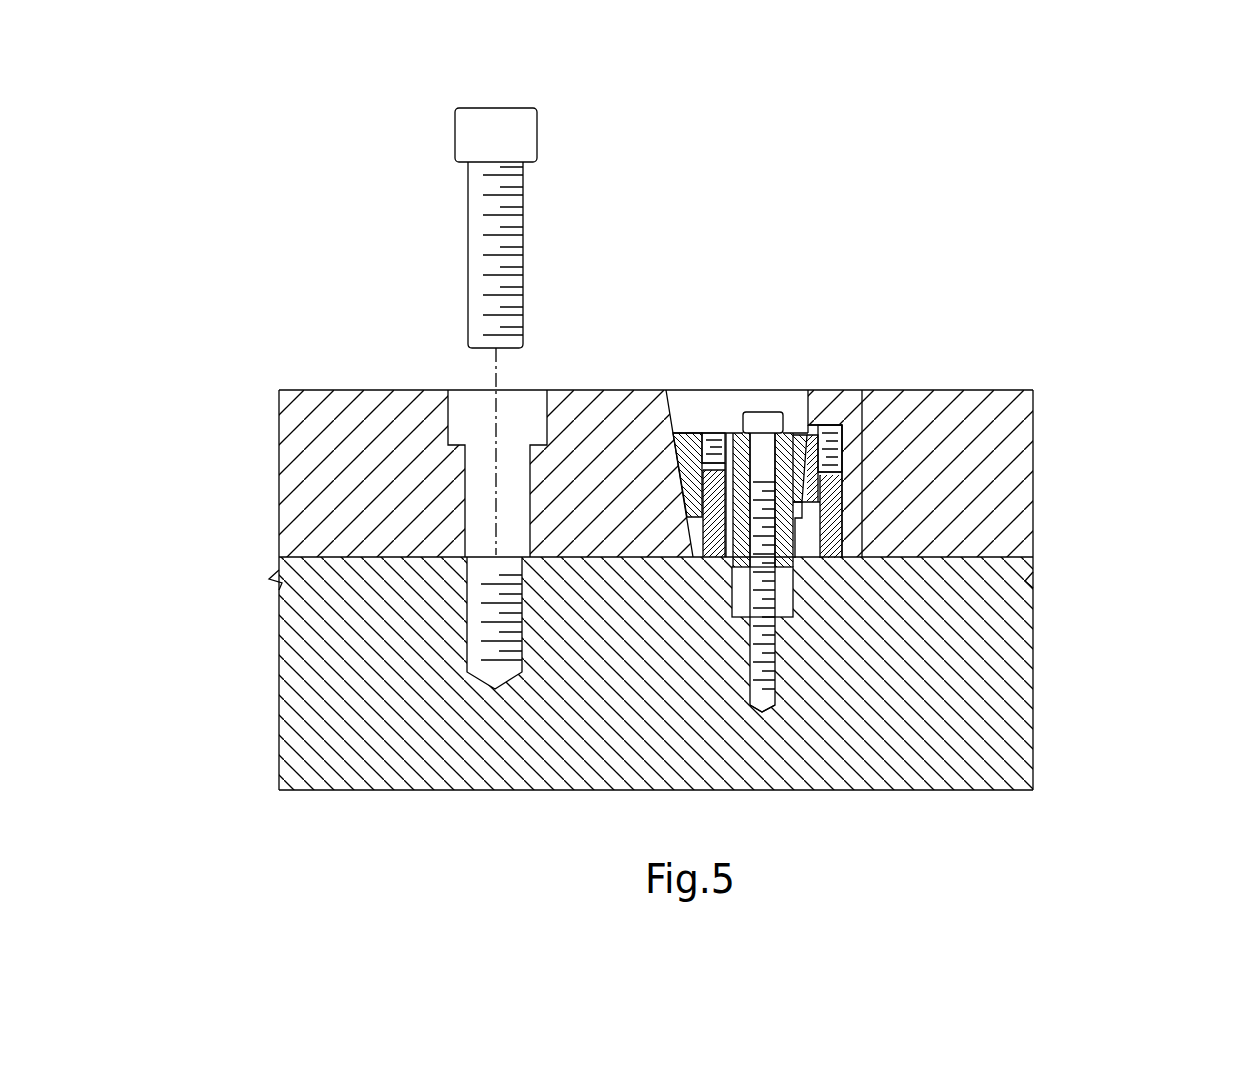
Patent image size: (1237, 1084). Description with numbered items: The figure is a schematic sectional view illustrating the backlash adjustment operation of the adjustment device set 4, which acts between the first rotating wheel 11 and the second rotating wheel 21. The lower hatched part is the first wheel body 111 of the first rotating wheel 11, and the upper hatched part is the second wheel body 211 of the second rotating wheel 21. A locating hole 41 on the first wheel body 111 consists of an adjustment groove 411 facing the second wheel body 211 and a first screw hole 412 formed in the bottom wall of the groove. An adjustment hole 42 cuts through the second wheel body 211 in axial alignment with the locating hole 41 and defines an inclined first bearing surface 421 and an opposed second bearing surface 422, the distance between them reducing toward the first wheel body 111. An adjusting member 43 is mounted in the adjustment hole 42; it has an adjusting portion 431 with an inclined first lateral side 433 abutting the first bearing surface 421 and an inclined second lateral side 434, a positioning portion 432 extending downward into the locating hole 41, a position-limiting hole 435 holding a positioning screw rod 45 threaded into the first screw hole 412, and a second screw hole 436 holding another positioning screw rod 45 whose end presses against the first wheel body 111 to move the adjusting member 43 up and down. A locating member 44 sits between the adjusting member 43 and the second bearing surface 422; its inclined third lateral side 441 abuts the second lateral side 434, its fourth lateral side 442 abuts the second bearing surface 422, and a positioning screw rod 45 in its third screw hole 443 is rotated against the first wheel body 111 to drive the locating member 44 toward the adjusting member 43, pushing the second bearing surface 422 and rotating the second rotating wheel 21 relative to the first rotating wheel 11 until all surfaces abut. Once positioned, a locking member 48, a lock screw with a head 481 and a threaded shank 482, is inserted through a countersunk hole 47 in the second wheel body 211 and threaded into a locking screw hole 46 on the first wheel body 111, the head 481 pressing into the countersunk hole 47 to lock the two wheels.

The adjustment device set 4 is at (760, 563).
The first rotating wheel 11 is at (1045, 660).
The first wheel body 111 is at (877, 790).
The second rotating wheel 21 is at (268, 426).
The second wheel body 211 is at (340, 389).
The locating hole 41 is at (925, 627).
The adjustment groove 411 is at (777, 682).
The first screw hole 412 is at (768, 708).
The adjustment hole 42 is at (677, 581).
The first bearing surface 421 is at (703, 472).
The second bearing surface 422 is at (1060, 522).
The adjusting member 43 is at (754, 554).
The adjusting portion 431 is at (738, 450).
The positioning portion 432 is at (795, 606).
The first lateral side 433 is at (703, 472).
The second lateral side 434 is at (840, 512).
The position-limiting hole 435 is at (800, 435).
The second screw hole 436 is at (712, 455).
The locating member 44 is at (964, 478).
The third lateral side 441 is at (840, 512).
The fourth lateral side 442 is at (845, 497).
The third screw hole 443 is at (840, 443).
The positioning screw rod 45 is at (695, 445).
The locking screw hole 46 is at (468, 650).
The countersunk hole 47 is at (465, 500).
The locking member 48 is at (506, 325).
The head 481 is at (515, 132).
The threaded shank 482 is at (468, 228).